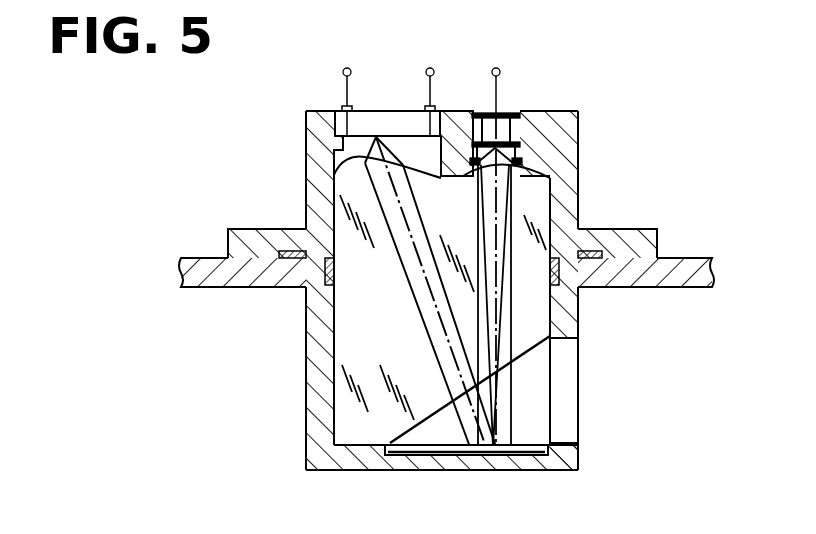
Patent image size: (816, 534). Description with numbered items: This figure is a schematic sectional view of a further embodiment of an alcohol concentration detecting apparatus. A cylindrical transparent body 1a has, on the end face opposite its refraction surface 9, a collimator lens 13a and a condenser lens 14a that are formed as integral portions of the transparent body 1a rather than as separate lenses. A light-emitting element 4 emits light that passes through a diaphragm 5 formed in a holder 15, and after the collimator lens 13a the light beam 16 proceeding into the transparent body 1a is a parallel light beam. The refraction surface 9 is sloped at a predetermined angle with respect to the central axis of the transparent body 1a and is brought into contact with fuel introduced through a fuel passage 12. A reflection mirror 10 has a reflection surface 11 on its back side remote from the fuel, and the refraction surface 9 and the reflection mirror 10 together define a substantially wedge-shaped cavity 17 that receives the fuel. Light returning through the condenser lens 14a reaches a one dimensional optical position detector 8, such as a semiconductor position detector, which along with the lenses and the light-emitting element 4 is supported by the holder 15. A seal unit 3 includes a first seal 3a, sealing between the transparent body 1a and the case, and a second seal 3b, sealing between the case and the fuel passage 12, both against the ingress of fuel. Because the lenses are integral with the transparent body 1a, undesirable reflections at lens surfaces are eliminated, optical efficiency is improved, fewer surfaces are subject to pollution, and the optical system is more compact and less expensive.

The cylindrical transparent body 1a is at (350, 440).
The seal unit 3 is at (220, 303).
The first seal 3a is at (305, 302).
The second seal 3b is at (300, 290).
The light-emitting element 4 is at (503, 112).
The diaphragm 5 is at (548, 117).
The optical position detector 8 is at (385, 118).
The refraction surface 9 is at (520, 355).
The reflection mirror 10 is at (438, 447).
The reflection surface 11 is at (464, 457).
The fuel passage 12 is at (558, 397).
The collimator lens 13a is at (552, 178).
The condenser lens 14a is at (334, 180).
The holder 15 is at (577, 135).
The light beam 16 is at (557, 320).
The wedge-shaped cavity 17 is at (523, 426).